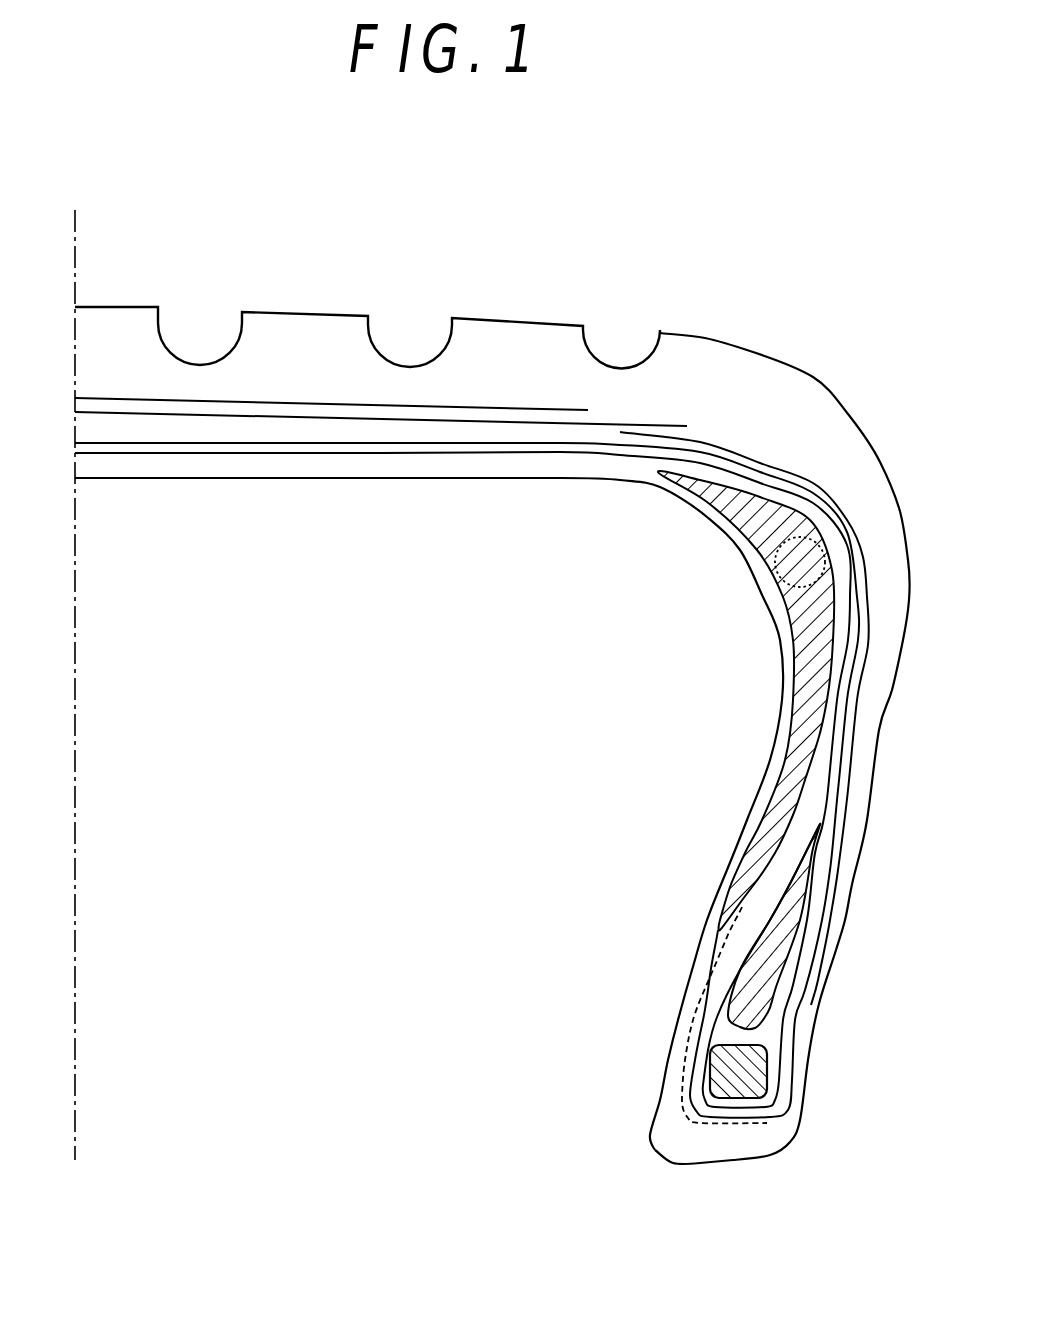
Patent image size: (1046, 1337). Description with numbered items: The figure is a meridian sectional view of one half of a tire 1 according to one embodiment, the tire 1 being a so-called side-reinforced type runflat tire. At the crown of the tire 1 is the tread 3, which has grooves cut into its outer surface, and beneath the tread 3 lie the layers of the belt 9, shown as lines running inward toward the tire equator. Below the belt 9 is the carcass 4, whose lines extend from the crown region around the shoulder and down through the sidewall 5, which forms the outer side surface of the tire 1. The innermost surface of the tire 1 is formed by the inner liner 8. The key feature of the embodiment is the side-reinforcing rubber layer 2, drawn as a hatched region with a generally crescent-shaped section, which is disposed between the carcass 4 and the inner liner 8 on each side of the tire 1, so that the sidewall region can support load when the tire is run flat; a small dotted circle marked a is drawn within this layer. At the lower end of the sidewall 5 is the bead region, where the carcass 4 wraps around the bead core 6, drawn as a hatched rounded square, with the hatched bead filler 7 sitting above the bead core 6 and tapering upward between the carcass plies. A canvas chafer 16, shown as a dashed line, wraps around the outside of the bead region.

The tire 1 is at (767, 317).
The side-reinforcing rubber layer 2 is at (752, 525).
The tread 3 is at (512, 320).
The carcass 4 is at (192, 442).
The sidewall 5 is at (872, 730).
The bead core 6 is at (710, 1057).
The bead filler 7 is at (773, 948).
The inner liner 8 is at (460, 480).
The belt 9 is at (297, 418).
The canvas chafer 16 is at (730, 1123).
The region a is at (785, 590).